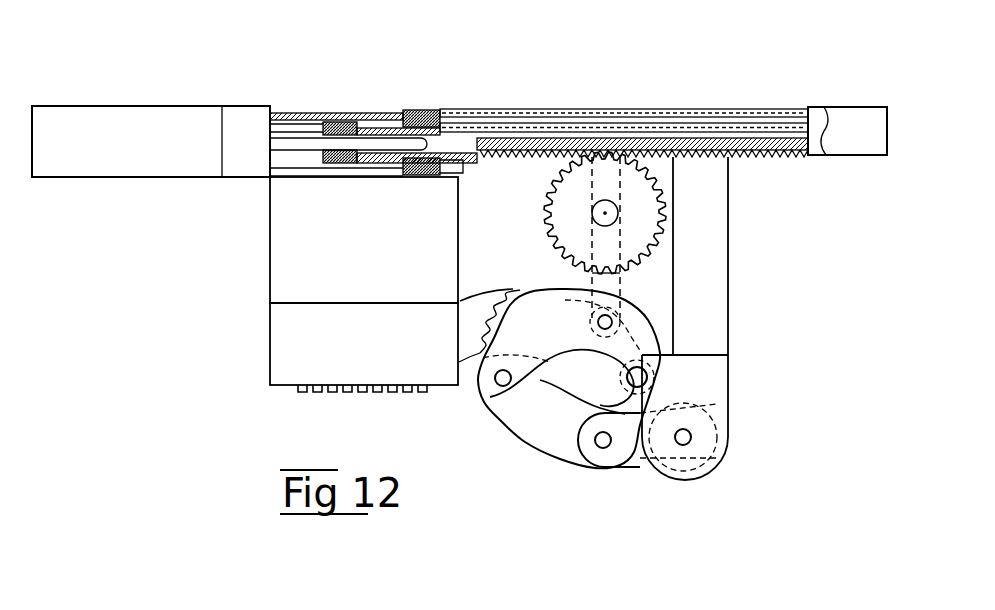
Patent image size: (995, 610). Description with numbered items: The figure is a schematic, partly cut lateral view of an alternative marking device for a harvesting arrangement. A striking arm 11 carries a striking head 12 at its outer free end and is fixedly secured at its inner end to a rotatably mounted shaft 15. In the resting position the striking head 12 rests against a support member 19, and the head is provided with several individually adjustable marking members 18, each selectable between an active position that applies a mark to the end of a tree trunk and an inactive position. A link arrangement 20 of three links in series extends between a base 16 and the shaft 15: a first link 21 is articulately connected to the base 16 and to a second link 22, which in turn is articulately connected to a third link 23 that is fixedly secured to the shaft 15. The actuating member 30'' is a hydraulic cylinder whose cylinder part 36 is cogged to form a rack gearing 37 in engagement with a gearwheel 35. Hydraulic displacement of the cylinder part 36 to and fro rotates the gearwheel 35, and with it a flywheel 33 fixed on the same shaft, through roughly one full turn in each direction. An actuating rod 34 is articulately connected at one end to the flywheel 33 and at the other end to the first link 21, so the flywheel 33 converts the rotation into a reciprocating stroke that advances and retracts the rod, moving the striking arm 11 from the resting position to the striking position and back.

The actuating member 30'' is at (539, 98).
The cylinder part 36 is at (826, 118).
The rack gearing 37 is at (753, 158).
The support member 19 is at (270, 246).
The striking head 12 is at (288, 349).
The marking members 18 is at (356, 393).
The striking arm 11 is at (477, 306).
The first link 21 is at (533, 316).
The second link 22 is at (540, 434).
The third link 23 is at (632, 462).
The shaft 15 is at (708, 466).
The base 16 is at (718, 344).
The gearwheel 35 is at (568, 212).
The flywheel 33 is at (666, 220).
The actuating rod 34 is at (640, 282).
The link arrangement 20 is at (568, 492).